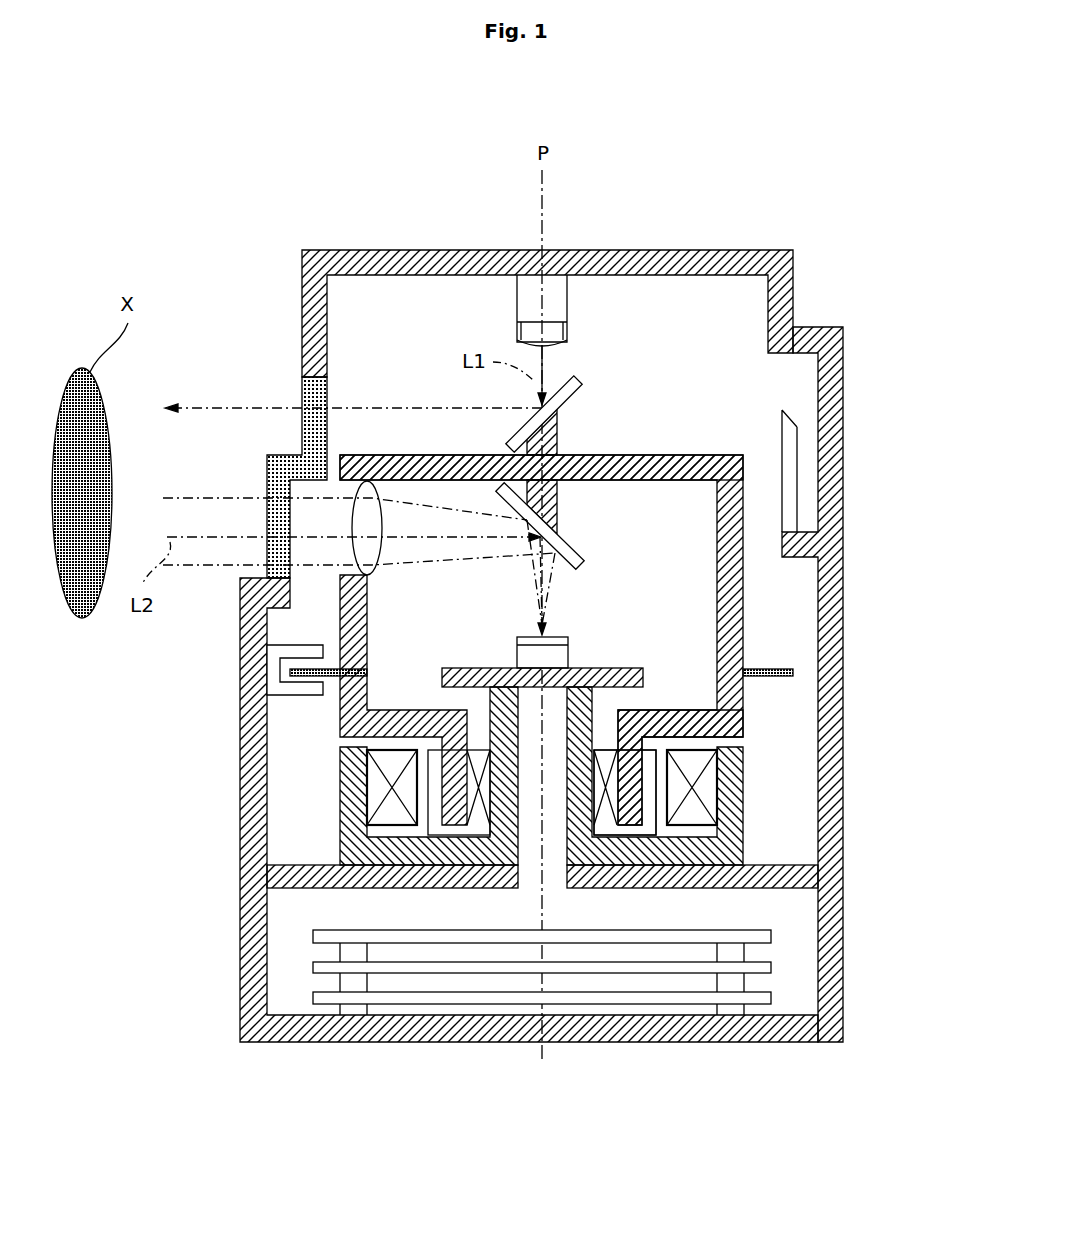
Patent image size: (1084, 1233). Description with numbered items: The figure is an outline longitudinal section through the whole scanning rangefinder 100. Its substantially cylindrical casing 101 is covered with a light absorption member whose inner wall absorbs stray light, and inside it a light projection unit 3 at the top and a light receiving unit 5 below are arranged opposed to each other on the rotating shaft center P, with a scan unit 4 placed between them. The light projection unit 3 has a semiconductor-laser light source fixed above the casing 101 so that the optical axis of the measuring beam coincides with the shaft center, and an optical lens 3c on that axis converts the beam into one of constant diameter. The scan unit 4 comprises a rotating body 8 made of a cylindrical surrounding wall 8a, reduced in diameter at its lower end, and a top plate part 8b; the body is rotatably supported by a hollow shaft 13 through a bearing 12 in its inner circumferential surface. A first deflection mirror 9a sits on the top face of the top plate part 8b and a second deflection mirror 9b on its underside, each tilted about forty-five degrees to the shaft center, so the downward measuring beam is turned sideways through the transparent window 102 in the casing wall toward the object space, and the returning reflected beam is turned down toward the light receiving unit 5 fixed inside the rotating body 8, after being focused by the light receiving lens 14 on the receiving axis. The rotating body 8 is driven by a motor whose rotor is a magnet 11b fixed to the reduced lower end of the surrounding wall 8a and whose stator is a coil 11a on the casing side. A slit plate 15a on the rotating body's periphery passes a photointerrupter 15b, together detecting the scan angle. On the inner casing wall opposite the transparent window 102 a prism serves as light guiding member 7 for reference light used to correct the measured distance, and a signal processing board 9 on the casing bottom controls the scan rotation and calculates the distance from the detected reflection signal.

The scanning rangefinder 100 is at (832, 257).
The casing 101 is at (845, 395).
The transparent window 102 is at (272, 465).
The light projection unit 3 is at (580, 312).
The optical lens 3c is at (560, 346).
The first deflection mirror 9a is at (575, 392).
The second deflection mirror 9b is at (572, 549).
The signal processing board 9 is at (280, 965).
The scan unit 4 is at (567, 603).
The rotating body 8 is at (745, 616).
The top plate part 8b is at (592, 455).
The surrounding wall 8a is at (492, 725).
The light guiding member 7 is at (790, 492).
The light receiving unit 5 is at (585, 648).
The hollow shaft 13 is at (600, 712).
The light receiving lens 14 is at (368, 556).
The slit plate 15a is at (330, 678).
The photointerrupter 15b is at (275, 690).
The coil 11a is at (707, 789).
The magnet 11b is at (652, 818).
The bearing 12 is at (603, 818).